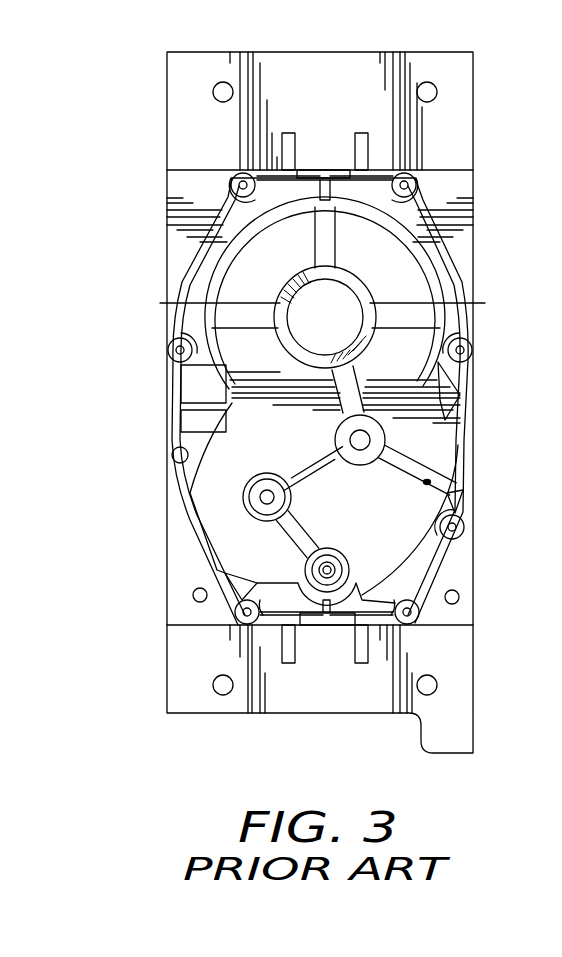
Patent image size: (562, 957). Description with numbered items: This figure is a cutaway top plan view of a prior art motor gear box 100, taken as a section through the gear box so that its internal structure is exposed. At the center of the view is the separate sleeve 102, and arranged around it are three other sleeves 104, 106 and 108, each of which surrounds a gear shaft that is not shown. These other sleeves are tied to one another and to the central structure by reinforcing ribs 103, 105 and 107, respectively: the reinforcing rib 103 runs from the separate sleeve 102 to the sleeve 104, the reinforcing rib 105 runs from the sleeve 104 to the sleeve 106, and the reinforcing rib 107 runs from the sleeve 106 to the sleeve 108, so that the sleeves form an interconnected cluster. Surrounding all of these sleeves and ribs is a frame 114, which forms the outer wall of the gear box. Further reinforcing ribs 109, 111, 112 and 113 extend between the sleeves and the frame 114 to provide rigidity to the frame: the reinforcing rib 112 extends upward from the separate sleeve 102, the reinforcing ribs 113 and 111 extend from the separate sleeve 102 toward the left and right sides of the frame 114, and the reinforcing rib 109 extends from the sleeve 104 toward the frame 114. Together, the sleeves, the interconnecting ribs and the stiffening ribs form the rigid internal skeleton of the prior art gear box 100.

The motor gear box 100 is at (167, 270).
The separate sleeve 102 is at (365, 285).
The reinforcing rib 103 is at (355, 373).
The sleeve 104 is at (372, 470).
The reinforcing rib 105 is at (312, 450).
The sleeve 106 is at (243, 497).
The reinforcing rib 107 is at (285, 539).
The sleeve 108 is at (330, 548).
The reinforcing rib 109 is at (430, 481).
The reinforcing rib 111 is at (449, 306).
The reinforcing rib 112 is at (313, 242).
The reinforcing rib 113 is at (195, 306).
The frame 114 is at (323, 168).